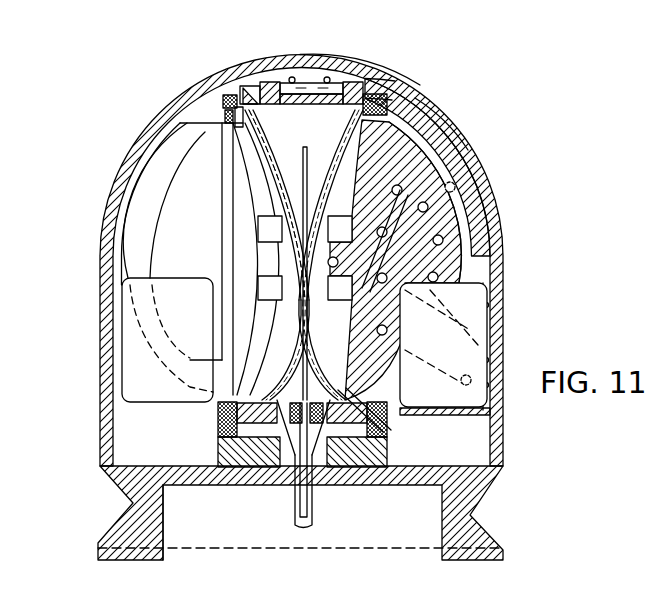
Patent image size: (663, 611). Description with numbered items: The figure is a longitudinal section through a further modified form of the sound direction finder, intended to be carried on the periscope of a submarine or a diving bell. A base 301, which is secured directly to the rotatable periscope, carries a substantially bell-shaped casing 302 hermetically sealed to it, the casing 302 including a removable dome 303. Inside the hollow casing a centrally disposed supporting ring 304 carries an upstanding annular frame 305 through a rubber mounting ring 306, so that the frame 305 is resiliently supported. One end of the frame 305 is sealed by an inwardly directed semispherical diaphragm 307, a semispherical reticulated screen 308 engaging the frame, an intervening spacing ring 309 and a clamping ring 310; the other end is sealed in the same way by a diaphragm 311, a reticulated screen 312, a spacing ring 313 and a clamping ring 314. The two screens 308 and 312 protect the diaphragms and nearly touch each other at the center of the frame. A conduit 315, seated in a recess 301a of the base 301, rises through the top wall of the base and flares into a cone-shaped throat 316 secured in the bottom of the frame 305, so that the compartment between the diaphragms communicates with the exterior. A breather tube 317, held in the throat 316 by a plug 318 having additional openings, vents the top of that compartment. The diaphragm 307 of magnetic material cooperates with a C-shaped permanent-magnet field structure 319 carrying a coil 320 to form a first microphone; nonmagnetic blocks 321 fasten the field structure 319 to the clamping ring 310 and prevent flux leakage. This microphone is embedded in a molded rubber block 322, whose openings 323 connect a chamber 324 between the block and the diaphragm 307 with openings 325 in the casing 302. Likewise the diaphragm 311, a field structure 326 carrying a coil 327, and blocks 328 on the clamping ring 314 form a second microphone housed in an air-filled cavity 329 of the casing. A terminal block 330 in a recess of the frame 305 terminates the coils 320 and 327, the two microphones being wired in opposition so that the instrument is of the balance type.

The base 301 is at (483, 527).
The recess 301a is at (163, 560).
The casing 302 is at (497, 183).
The removable dome 303 is at (353, 63).
The supporting ring 304 is at (220, 447).
The annular frame 305 is at (265, 82).
The mounting ring 306 is at (387, 440).
The diaphragm 307 is at (352, 133).
The reticulated screen 308 is at (377, 78).
The spacing ring 309 is at (378, 88).
The clamping ring 310 is at (432, 150).
The diaphragm 311 is at (273, 143).
The reticulated screen 312 is at (258, 80).
The spacing ring 313 is at (238, 85).
The clamping ring 314 is at (227, 100).
The conduit 315 is at (300, 517).
The cone-shaped throat 316 is at (263, 403).
The breather tube 317 is at (306, 386).
The plug 318 is at (328, 402).
The field structure 319 is at (470, 150).
The coil 320 is at (488, 322).
The blocks 321 is at (382, 118).
The molded block 322 is at (455, 225).
The openings 323 is at (399, 262).
The chamber 324 is at (400, 108).
The openings 325 is at (468, 255).
The field structure 326 is at (160, 180).
The coil 327 is at (130, 360).
The blocks 328 is at (236, 128).
The air filled cavity 329 is at (226, 259).
The terminal block 330 is at (307, 83).